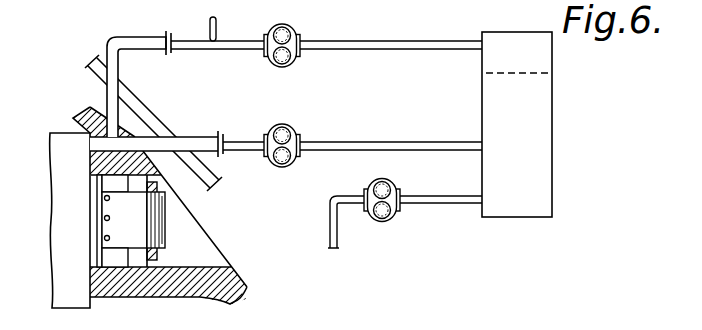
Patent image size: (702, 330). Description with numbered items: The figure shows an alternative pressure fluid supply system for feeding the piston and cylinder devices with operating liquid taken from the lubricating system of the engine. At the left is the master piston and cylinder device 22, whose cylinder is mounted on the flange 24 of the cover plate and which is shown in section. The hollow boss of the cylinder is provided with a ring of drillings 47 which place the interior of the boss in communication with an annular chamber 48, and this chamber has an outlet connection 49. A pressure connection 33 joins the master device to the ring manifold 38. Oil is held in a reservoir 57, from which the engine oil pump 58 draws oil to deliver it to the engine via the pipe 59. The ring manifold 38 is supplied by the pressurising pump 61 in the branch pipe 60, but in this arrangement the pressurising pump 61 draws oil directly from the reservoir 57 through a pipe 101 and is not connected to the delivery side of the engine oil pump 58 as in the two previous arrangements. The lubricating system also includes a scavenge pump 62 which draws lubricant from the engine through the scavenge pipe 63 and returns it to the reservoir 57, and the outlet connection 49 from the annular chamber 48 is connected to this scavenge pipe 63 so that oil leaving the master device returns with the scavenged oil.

The master piston and cylinder device 22 is at (63, 130).
The flange 24 is at (240, 279).
The pressure connection 33 is at (133, 146).
The ring manifold 38 is at (134, 98).
The ring of drillings 47 is at (103, 237).
The annular chamber 48 is at (112, 272).
The outlet connection 49 is at (141, 36).
The reservoir 57 is at (512, 42).
The engine oil pump 58 is at (386, 223).
The pipe 59 is at (330, 228).
The branch pipe 60 is at (227, 139).
The pressurising pump 61 is at (288, 126).
The scavenge pump 62 is at (292, 29).
The scavenge pipe 63 is at (218, 32).
The pipe 101 is at (375, 142).